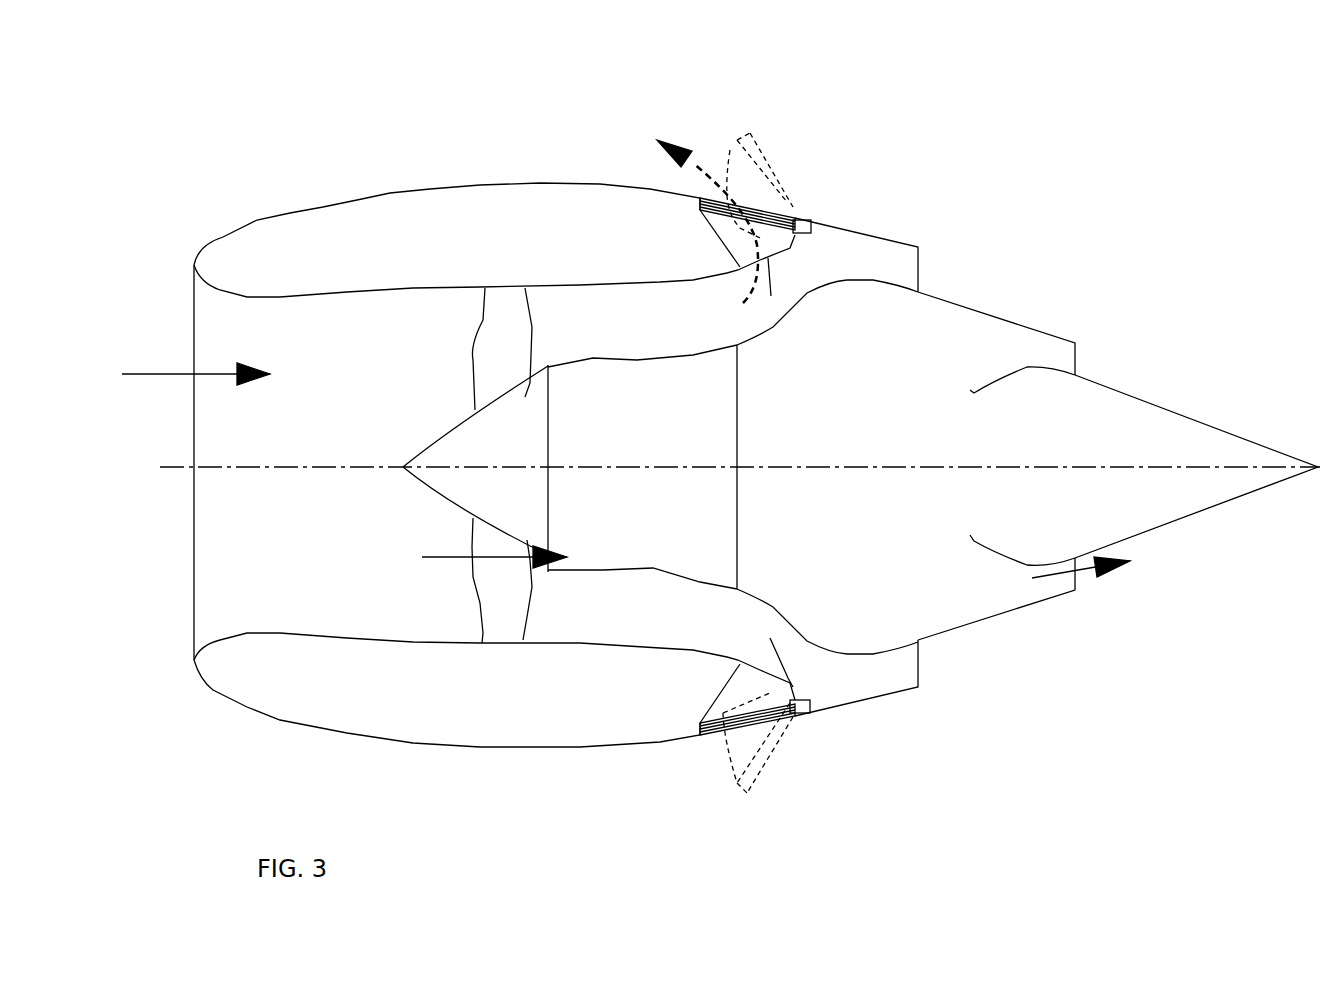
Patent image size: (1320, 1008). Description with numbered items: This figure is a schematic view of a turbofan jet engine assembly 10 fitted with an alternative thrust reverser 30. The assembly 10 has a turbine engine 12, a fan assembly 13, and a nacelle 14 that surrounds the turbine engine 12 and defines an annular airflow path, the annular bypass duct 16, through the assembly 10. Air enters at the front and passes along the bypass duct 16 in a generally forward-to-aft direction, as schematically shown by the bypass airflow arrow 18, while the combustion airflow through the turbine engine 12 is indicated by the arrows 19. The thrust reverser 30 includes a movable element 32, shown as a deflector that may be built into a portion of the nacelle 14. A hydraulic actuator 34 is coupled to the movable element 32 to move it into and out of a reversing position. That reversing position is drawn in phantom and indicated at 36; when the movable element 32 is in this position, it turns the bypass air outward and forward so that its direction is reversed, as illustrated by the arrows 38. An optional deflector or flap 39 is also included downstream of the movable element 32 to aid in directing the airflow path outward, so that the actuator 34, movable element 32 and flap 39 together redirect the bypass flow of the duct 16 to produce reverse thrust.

The turbofan jet engine assembly 10 is at (219, 200).
The turbine engine 12 is at (633, 393).
The fan assembly 13 is at (497, 308).
The nacelle 14 is at (318, 206).
The annular bypass duct 16 is at (563, 318).
The bypass airflow path arrow 18 is at (177, 372).
The combustion airflow arrows 19 is at (495, 557).
The thrust reverser 30 is at (768, 258).
The movable element 32 is at (752, 205).
The hydraulic actuator 34 is at (813, 222).
The reversing position 36 is at (730, 150).
The reversed airflow arrows 38 is at (727, 195).
The deflector or flap 39 is at (790, 272).